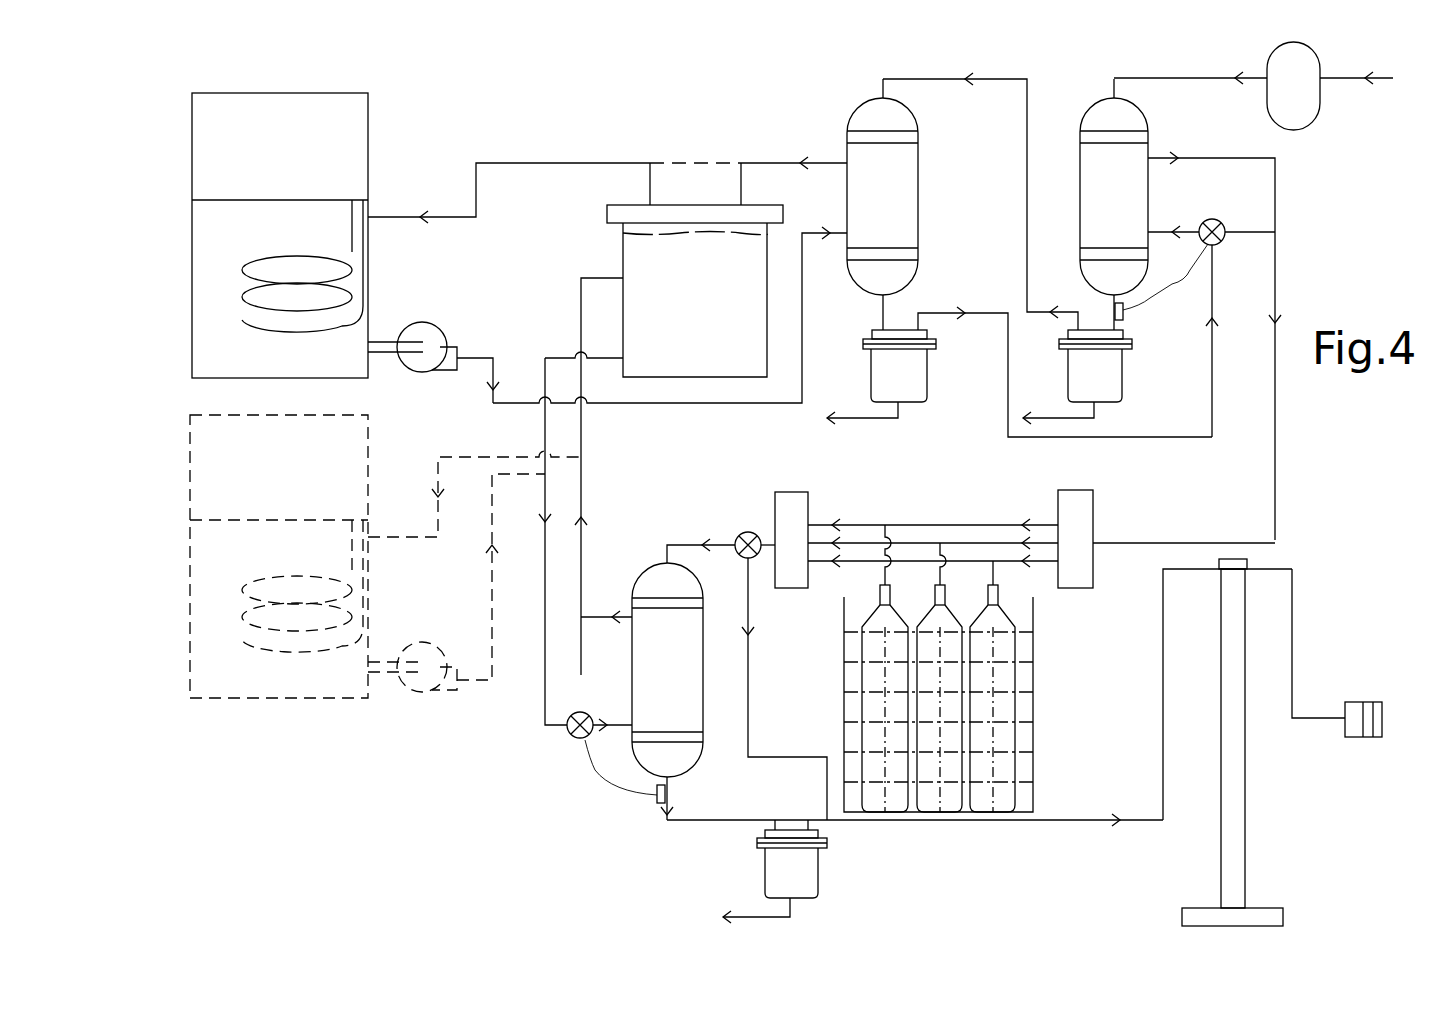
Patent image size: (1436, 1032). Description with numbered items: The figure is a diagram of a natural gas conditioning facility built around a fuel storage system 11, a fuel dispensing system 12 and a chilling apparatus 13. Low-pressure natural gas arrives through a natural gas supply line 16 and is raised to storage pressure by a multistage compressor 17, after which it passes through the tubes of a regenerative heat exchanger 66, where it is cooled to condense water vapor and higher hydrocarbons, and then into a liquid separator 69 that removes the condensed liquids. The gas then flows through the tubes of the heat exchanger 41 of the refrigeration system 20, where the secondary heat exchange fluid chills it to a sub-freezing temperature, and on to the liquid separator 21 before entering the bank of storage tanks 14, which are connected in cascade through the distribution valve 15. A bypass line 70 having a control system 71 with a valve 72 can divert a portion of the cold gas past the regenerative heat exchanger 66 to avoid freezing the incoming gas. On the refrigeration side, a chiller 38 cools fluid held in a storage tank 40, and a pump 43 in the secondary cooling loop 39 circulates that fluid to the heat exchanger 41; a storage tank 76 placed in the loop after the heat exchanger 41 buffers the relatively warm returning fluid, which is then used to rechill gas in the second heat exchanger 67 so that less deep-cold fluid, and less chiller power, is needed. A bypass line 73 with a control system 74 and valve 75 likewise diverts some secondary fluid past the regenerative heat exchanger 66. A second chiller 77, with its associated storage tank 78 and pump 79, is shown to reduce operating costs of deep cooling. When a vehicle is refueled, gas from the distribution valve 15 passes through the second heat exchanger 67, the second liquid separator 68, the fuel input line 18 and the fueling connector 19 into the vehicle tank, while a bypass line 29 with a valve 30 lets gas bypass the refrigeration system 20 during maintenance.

The refrigeration system 20 is at (262, 95).
The chiller 38 is at (240, 92).
The storage tank 40 is at (190, 245).
The pump 43 is at (447, 372).
The secondary cooling loop 39 is at (585, 163).
The storage tank 76 is at (700, 205).
The heat exchanger 41 is at (847, 135).
The liquid separator 21 is at (927, 380).
The chilling apparatus 13 is at (1035, 81).
The regenerative heat exchanger 66 is at (1080, 196).
The liquid separator 69 is at (1122, 380).
The valve 72 is at (1217, 219).
The bypass line 70 is at (1248, 231).
The control system 71 is at (1190, 273).
The multistage compressor 17 is at (1290, 130).
The natural gas supply line 16 is at (1380, 78).
The fuel dispensing system 12 is at (1320, 560).
The fuel input line 18 is at (1292, 656).
The fueling connector 19 is at (1357, 702).
The fuel storage system 11 is at (938, 521).
The distribution valve 15 is at (808, 492).
The valve 30 is at (746, 532).
The bypass line 29 is at (748, 675).
The second heat exchanger 67 is at (703, 672).
The storage tanks 14 is at (993, 738).
The second liquid separator 68 is at (765, 885).
The control system 74 is at (612, 785).
The valve 75 is at (572, 740).
The bypass line 73 is at (580, 675).
The second chiller 77 is at (240, 412).
The storage tank 78 is at (190, 595).
The pump 79 is at (440, 690).